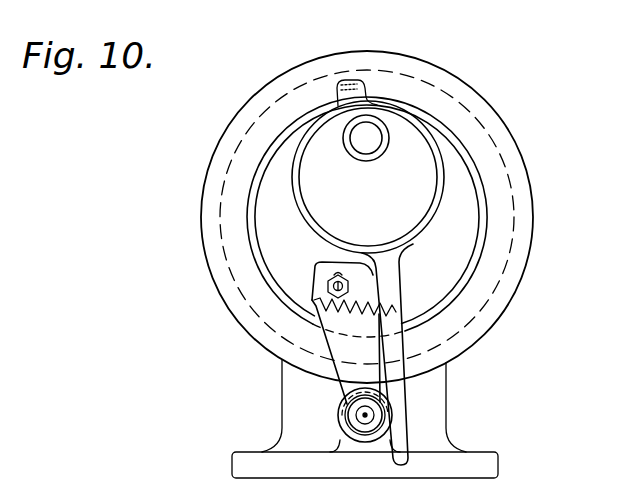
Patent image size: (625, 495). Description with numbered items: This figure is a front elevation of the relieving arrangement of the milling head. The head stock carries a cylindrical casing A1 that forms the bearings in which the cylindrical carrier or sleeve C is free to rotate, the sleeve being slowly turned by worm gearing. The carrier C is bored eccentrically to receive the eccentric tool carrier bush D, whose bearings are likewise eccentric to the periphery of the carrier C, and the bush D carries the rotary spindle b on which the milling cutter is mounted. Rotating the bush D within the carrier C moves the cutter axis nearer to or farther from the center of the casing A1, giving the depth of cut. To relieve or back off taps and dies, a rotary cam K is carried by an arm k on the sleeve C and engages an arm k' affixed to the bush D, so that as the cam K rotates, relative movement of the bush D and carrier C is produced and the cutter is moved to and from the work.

The cylindrical casing A1 is at (512, 143).
The eccentric tool carrier bush D is at (380, 192).
The rotary spindle b is at (370, 140).
The cylindrical carrier or sleeve C is at (402, 354).
The arm k is at (354, 318).
The arm k' is at (371, 353).
The rotary cam K is at (339, 421).